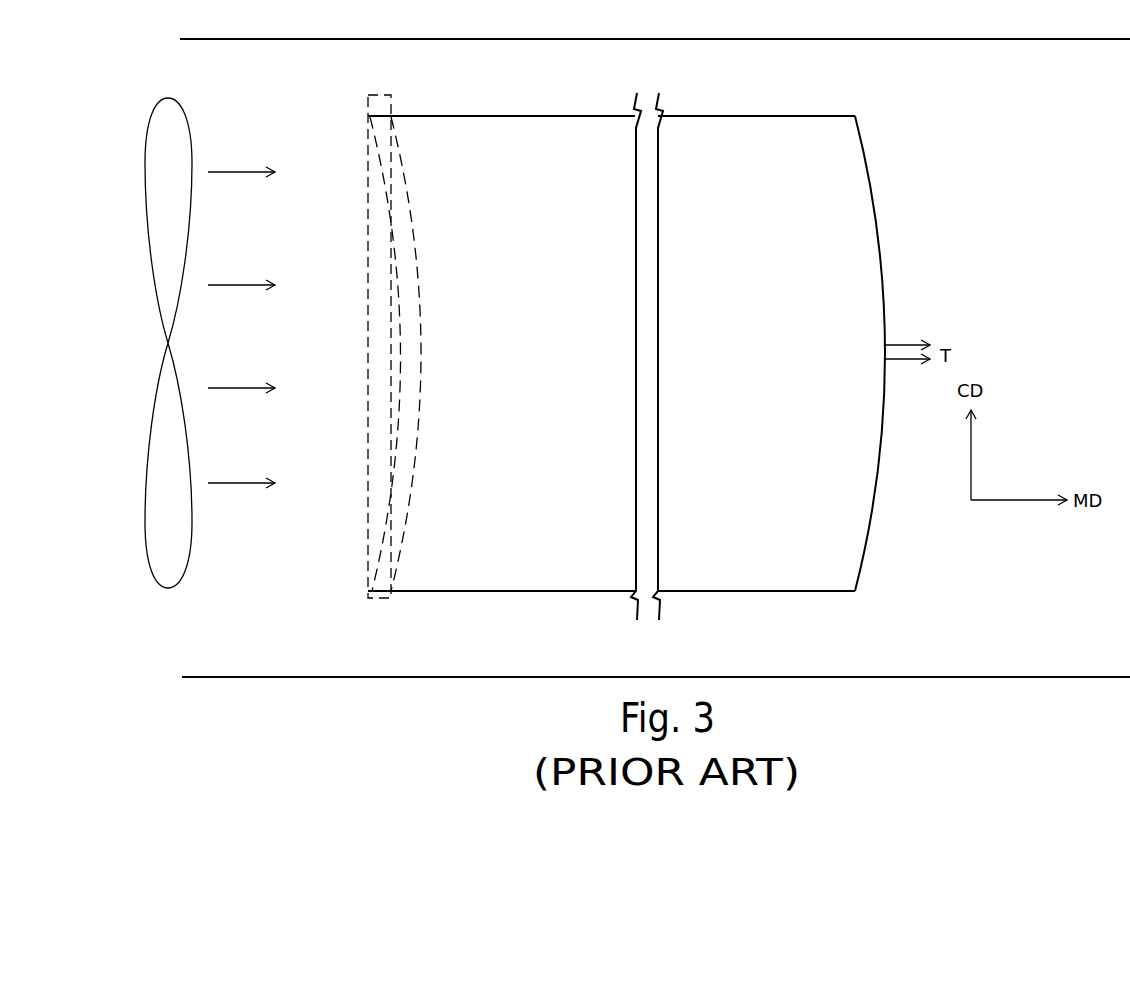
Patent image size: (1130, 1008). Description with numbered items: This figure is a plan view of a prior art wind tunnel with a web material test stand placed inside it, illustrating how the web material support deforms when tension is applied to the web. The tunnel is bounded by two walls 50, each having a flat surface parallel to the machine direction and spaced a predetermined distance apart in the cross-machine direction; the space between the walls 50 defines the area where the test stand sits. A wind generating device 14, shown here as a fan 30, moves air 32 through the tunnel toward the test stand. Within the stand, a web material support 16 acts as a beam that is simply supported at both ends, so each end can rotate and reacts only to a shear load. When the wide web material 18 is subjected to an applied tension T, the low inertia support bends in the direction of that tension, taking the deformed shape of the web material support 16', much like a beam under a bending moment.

The wind generating device 14 is at (246, 361).
The fan 30 is at (186, 572).
The air 32 is at (253, 135).
The web material support 16 is at (410, 385).
The deformed web material support 16' is at (431, 354).
The web material 18 is at (548, 398).
The walls 50 is at (1078, 39).